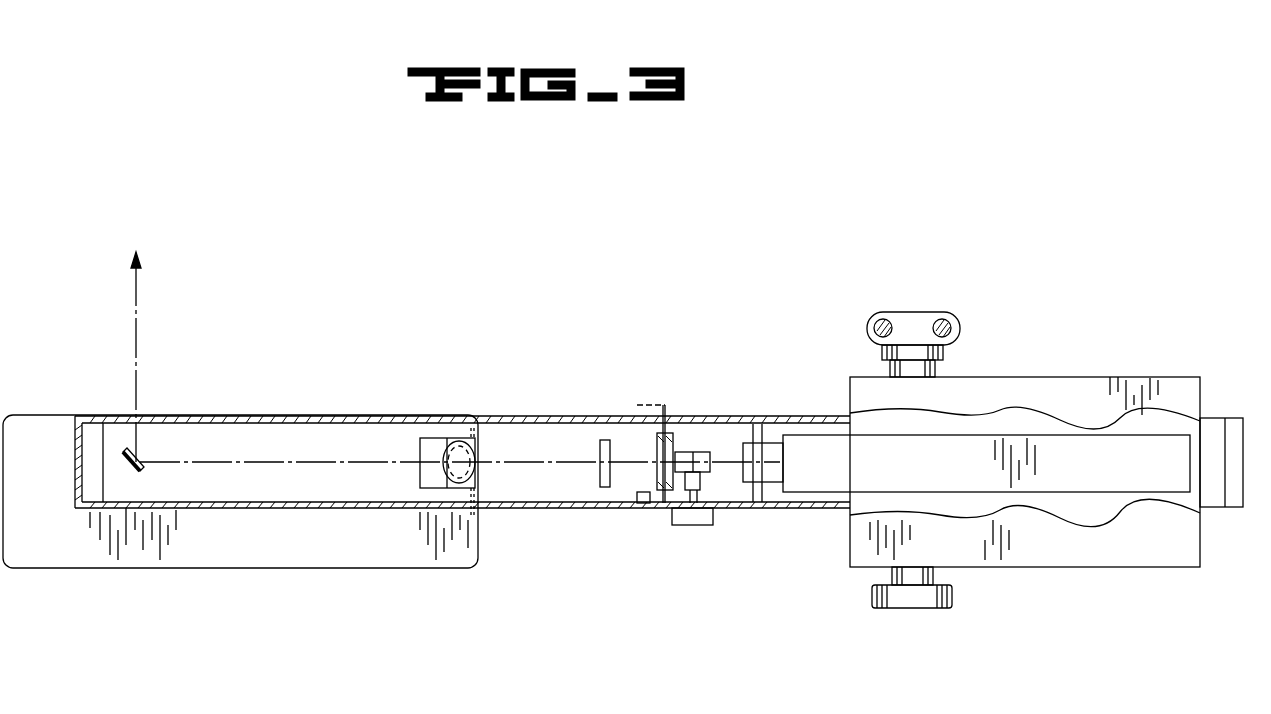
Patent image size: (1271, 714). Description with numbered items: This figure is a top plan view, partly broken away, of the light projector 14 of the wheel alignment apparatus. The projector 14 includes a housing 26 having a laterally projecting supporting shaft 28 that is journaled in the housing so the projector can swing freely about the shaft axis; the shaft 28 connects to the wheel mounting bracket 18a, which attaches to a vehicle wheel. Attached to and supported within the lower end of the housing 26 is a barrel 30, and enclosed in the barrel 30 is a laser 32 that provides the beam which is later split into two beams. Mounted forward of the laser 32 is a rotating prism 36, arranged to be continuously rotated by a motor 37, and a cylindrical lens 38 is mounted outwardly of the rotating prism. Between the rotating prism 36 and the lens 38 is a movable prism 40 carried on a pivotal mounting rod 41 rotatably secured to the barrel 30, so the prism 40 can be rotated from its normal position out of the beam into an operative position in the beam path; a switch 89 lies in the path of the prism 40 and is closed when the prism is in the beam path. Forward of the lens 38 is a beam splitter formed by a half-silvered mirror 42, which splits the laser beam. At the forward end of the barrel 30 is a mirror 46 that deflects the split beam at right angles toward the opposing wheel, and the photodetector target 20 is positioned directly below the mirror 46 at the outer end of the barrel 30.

The light projector 14 is at (545, 335).
The photodetector target 20 is at (63, 571).
The barrel 30 is at (350, 416).
The mirror 46 is at (140, 471).
The half-silvered mirror 42 is at (476, 446).
The cylindrical lens 38 is at (600, 447).
The switch 89 is at (637, 497).
The pivotal mounting rod 41 is at (662, 497).
The movable prism 40 is at (675, 442).
The rotating prism 36 is at (703, 452).
The motor 37 is at (695, 525).
The laser 32 is at (936, 473).
The housing 26 is at (1150, 377).
The mounting bracket 18a is at (910, 311).
The supporting shaft 28 is at (930, 367).